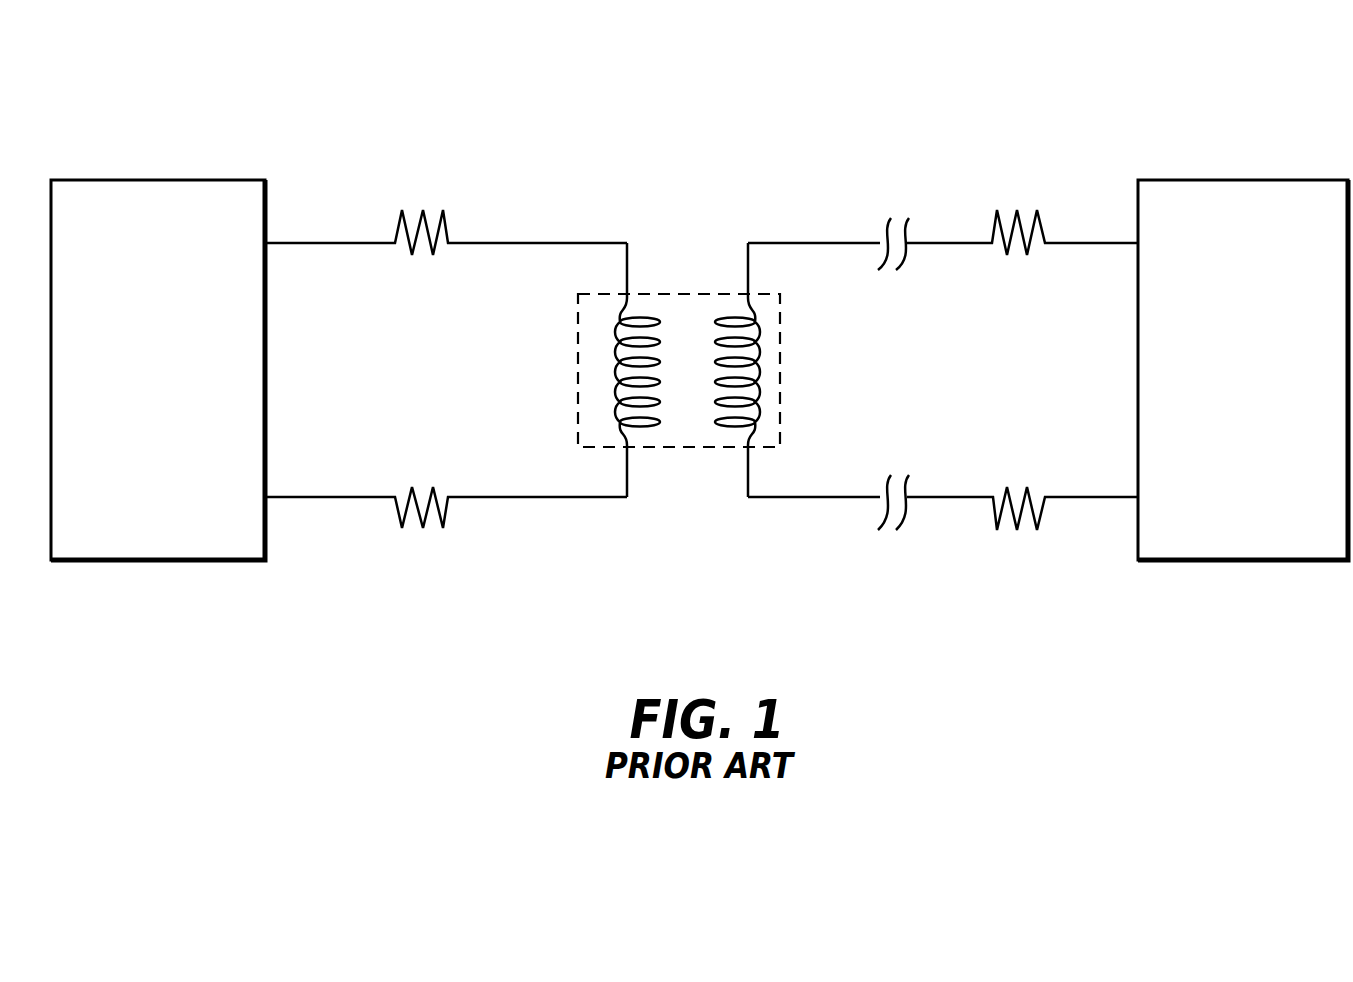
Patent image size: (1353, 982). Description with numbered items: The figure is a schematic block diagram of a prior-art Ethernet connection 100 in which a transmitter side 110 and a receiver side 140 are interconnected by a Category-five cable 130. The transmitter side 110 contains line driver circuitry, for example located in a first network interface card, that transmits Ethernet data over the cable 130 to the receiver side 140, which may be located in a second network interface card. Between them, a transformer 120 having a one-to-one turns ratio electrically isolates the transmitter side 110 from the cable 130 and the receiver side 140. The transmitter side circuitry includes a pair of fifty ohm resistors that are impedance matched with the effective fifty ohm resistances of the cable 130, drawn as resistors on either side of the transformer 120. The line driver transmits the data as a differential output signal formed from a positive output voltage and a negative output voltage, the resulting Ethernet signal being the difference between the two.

The Ethernet connection 100 is at (691, 163).
The transmitter side 110 is at (176, 410).
The transformer 120 is at (689, 474).
The Category-5 cable 130 is at (936, 403).
The receiver side 140 is at (1228, 410).